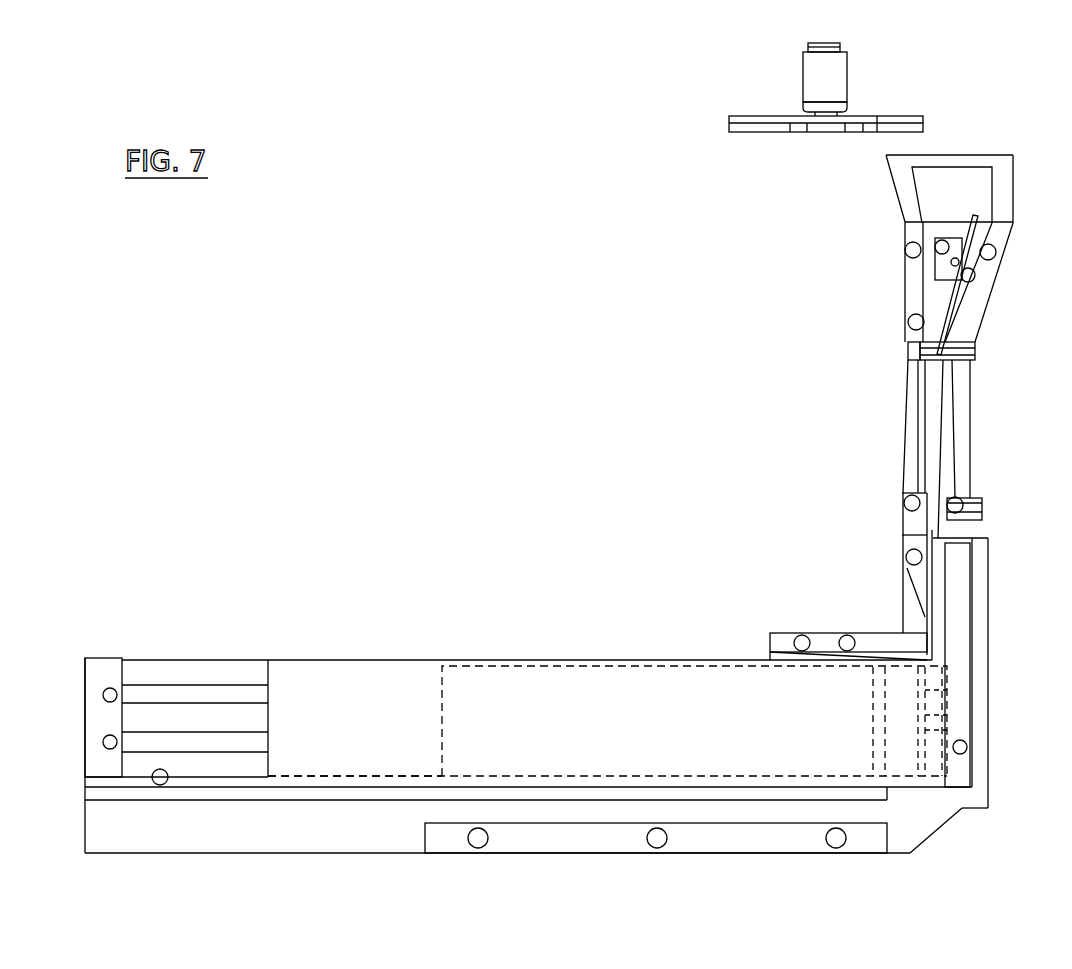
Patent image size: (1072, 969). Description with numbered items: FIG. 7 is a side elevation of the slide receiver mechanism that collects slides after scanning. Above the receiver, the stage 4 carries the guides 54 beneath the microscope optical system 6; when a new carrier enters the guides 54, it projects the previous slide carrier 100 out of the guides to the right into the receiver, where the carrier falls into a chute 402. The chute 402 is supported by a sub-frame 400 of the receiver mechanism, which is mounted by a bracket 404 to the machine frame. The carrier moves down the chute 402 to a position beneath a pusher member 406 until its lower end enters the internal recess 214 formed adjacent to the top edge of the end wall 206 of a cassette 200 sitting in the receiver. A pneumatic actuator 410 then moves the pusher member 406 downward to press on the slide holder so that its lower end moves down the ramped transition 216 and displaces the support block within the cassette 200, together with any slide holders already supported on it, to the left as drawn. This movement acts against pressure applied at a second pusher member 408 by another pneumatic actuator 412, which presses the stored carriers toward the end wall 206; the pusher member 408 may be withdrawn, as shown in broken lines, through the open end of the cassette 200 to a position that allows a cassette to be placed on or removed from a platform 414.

The stage 4 is at (804, 160).
The microscope optical system 6 is at (848, 72).
The guides 54 is at (918, 118).
The slide carrier 100 is at (866, 120).
The cassette 200 is at (440, 697).
The end wall 206 is at (968, 746).
The internal recess 214 is at (945, 692).
The ramped transition 216 is at (945, 717).
The sub-frame 400 is at (935, 825).
The chute 402 is at (983, 295).
The bracket 404 is at (425, 832).
The pusher member 406 is at (920, 400).
The pusher member 408 is at (820, 633).
The pneumatic actuator 410 is at (965, 423).
The pneumatic actuator 412 is at (138, 636).
The platform 414 is at (378, 775).